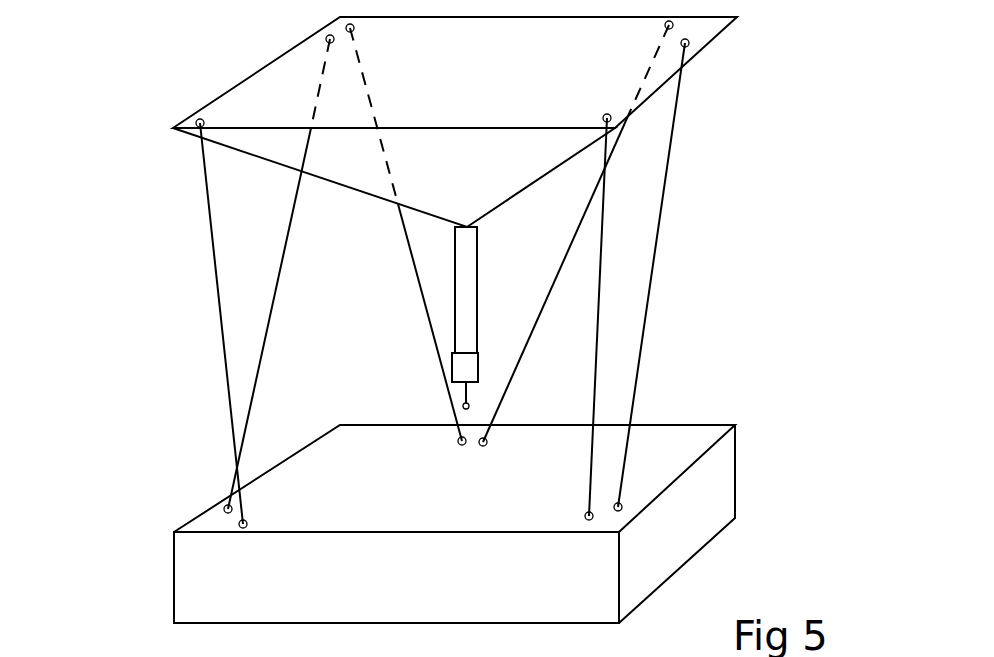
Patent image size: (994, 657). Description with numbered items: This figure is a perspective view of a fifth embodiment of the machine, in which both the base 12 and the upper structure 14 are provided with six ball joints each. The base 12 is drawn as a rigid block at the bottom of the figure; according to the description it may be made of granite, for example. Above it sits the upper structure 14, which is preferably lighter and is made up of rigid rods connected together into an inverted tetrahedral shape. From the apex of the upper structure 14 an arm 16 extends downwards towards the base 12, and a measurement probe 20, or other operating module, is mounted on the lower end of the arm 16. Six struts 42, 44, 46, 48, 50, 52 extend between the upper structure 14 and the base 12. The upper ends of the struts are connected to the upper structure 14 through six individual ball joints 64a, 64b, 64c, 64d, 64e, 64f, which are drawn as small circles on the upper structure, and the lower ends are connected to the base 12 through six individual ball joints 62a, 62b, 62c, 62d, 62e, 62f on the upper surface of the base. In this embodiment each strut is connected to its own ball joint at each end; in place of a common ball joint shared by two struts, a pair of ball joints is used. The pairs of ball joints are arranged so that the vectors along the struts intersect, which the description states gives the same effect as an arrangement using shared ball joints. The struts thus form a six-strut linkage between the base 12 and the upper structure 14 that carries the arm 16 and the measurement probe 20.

The base 12 is at (197, 595).
The upper structure 14 is at (278, 80).
The arm 16 is at (470, 287).
The measurement probe 20 is at (465, 373).
The strut 42 is at (220, 318).
The strut 44 is at (267, 342).
The strut 46 is at (418, 283).
The strut 48 is at (532, 336).
The strut 50 is at (638, 367).
The strut 52 is at (595, 398).
The ball joint 62a is at (247, 524).
The ball joint 62b is at (224, 508).
The ball joint 62c is at (458, 443).
The ball joint 62d is at (487, 444).
The ball joint 62e is at (621, 504).
The ball joint 62f is at (585, 517).
The ball joint 64a is at (196, 122).
The ball joint 64b is at (327, 36).
The ball joint 64c is at (354, 30).
The ball joint 64d is at (665, 27).
The ball joint 64e is at (689, 45).
The ball joint 64f is at (604, 115).